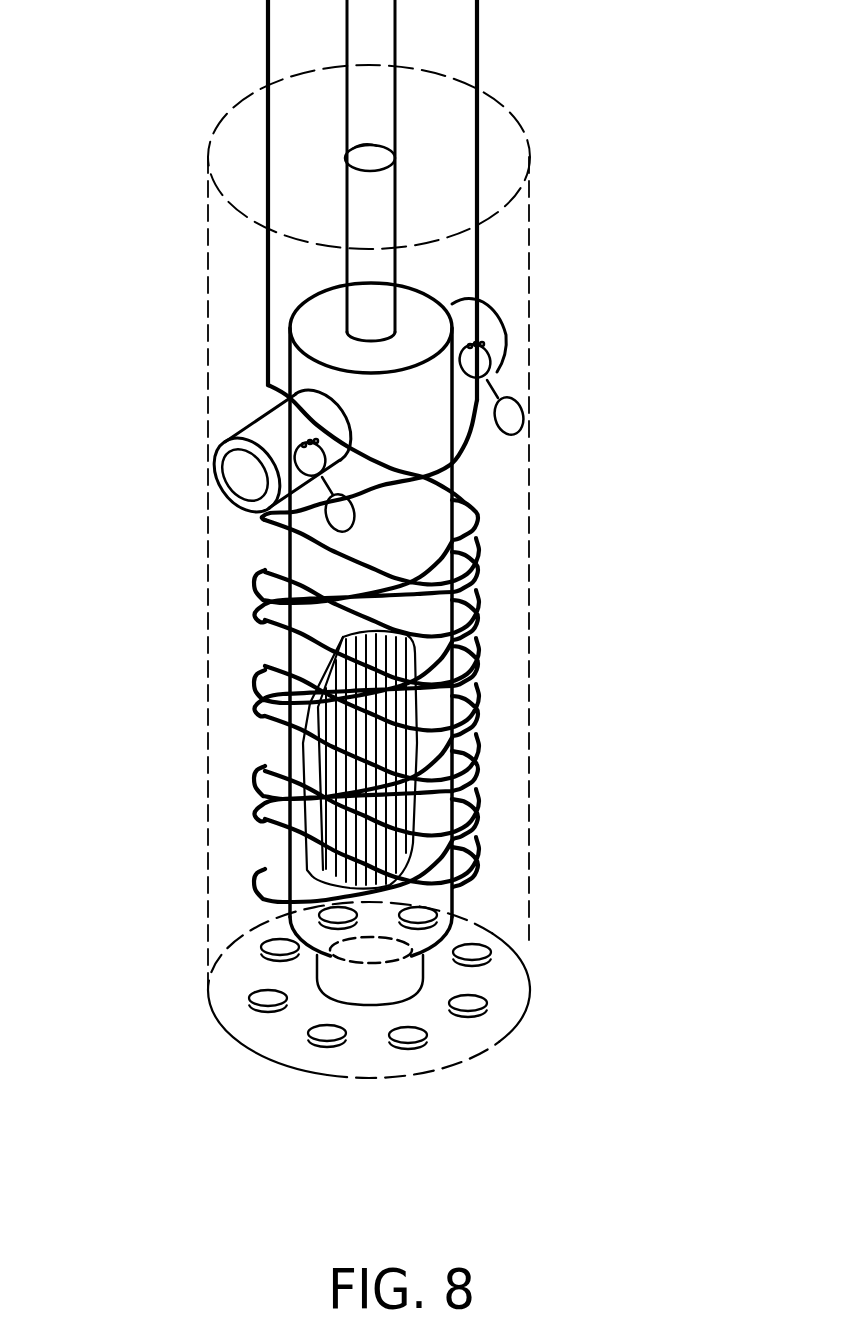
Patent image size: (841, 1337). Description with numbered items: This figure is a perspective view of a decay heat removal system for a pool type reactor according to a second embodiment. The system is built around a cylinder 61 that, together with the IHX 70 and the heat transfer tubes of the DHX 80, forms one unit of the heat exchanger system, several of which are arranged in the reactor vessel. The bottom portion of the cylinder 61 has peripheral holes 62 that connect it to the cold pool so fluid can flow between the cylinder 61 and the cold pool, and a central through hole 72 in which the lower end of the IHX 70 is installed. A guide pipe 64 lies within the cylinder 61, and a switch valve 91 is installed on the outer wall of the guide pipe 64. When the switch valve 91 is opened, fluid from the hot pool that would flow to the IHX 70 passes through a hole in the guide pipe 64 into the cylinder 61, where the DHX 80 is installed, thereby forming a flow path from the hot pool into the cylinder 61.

The cylinder 61 is at (529, 632).
The peripheral holes 62 is at (490, 952).
The guide pipe 64 is at (235, 470).
The IHX 70 is at (412, 522).
The central through hole 72 is at (387, 980).
The DHX 80 is at (470, 765).
The switch valve 91 is at (486, 371).